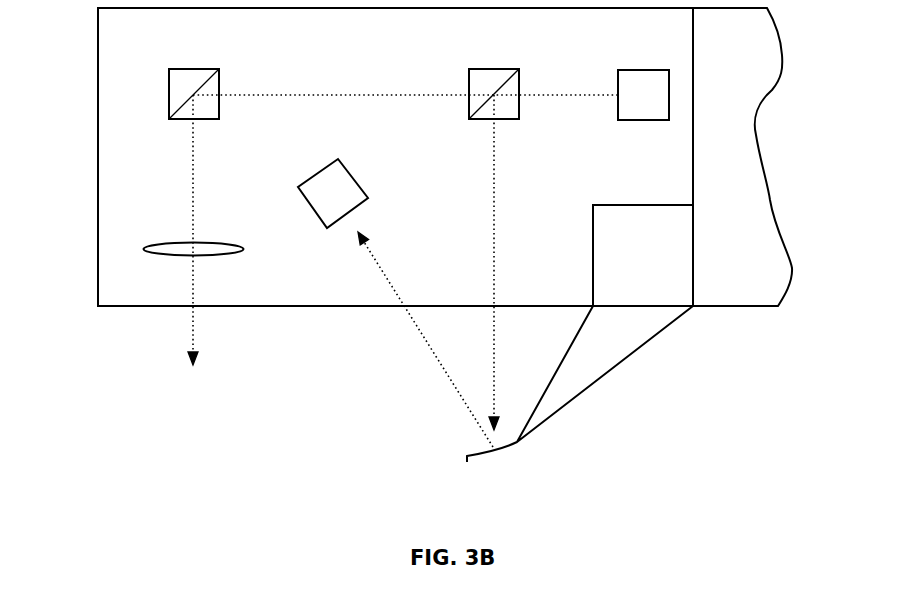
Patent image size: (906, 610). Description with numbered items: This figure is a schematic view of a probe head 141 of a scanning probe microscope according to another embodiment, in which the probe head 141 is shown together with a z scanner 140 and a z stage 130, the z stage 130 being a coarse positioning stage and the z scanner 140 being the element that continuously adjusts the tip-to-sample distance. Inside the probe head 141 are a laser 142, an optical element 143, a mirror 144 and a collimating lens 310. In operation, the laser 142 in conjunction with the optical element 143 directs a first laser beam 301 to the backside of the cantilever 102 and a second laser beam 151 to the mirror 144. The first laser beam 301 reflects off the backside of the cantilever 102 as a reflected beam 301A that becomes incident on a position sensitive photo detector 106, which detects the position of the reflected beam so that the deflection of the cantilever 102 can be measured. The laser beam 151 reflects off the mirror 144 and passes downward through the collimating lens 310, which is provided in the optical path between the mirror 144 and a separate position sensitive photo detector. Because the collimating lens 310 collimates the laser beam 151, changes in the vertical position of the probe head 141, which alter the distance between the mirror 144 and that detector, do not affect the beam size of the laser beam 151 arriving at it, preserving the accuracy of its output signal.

The cantilever 102 is at (497, 452).
The position sensitive photo detector 106 is at (358, 178).
The z stage 130 is at (763, 286).
The z scanner 140 is at (667, 269).
The probe head 141 is at (98, 177).
The laser 142 is at (642, 69).
The optical element 143 is at (521, 108).
The mirror 144 is at (196, 69).
The laser beam 151 is at (193, 207).
The first laser beam 301 is at (494, 207).
The reflected light beam 301A is at (397, 293).
The collimating lens 310 is at (222, 244).